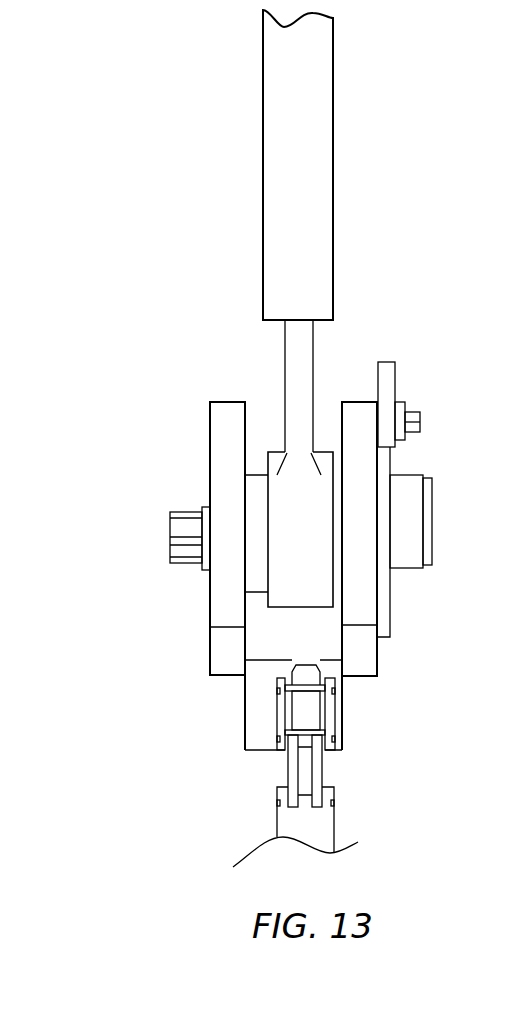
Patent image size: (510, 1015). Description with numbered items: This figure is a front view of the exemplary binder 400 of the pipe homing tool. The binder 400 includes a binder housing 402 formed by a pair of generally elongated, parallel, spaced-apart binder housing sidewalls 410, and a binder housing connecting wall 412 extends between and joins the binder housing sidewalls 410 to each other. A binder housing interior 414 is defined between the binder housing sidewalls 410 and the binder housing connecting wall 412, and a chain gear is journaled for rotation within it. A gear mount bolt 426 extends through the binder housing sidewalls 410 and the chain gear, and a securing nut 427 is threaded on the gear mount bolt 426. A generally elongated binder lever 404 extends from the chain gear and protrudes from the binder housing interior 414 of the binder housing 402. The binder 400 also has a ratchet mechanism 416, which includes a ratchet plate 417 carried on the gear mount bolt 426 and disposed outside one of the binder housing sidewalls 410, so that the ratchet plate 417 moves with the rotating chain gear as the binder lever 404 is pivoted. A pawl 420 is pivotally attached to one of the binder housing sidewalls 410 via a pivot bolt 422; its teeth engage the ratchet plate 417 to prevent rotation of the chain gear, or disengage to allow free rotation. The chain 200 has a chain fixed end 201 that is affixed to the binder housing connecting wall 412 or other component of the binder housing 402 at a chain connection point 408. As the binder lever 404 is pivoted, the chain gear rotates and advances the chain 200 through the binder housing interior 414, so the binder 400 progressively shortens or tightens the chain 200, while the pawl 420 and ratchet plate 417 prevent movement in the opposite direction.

The binder 400 is at (200, 285).
The binder lever 404 is at (285, 135).
The binder housing interior 414 is at (258, 398).
The chain connection point 408 is at (303, 662).
The binder housing 402 is at (205, 425).
The binder housing sidewalls 410 is at (222, 593).
The pawl 420 is at (392, 360).
The ratchet mechanism 416 is at (408, 388).
The ratchet plate 417 is at (385, 621).
The pivot bolt 422 is at (420, 422).
The gear mount bolt 426 is at (412, 518).
The securing nut 427 is at (185, 528).
The binder housing connecting wall 412 is at (337, 708).
The chain fixed end 201 is at (275, 680).
The chain 200 is at (283, 770).